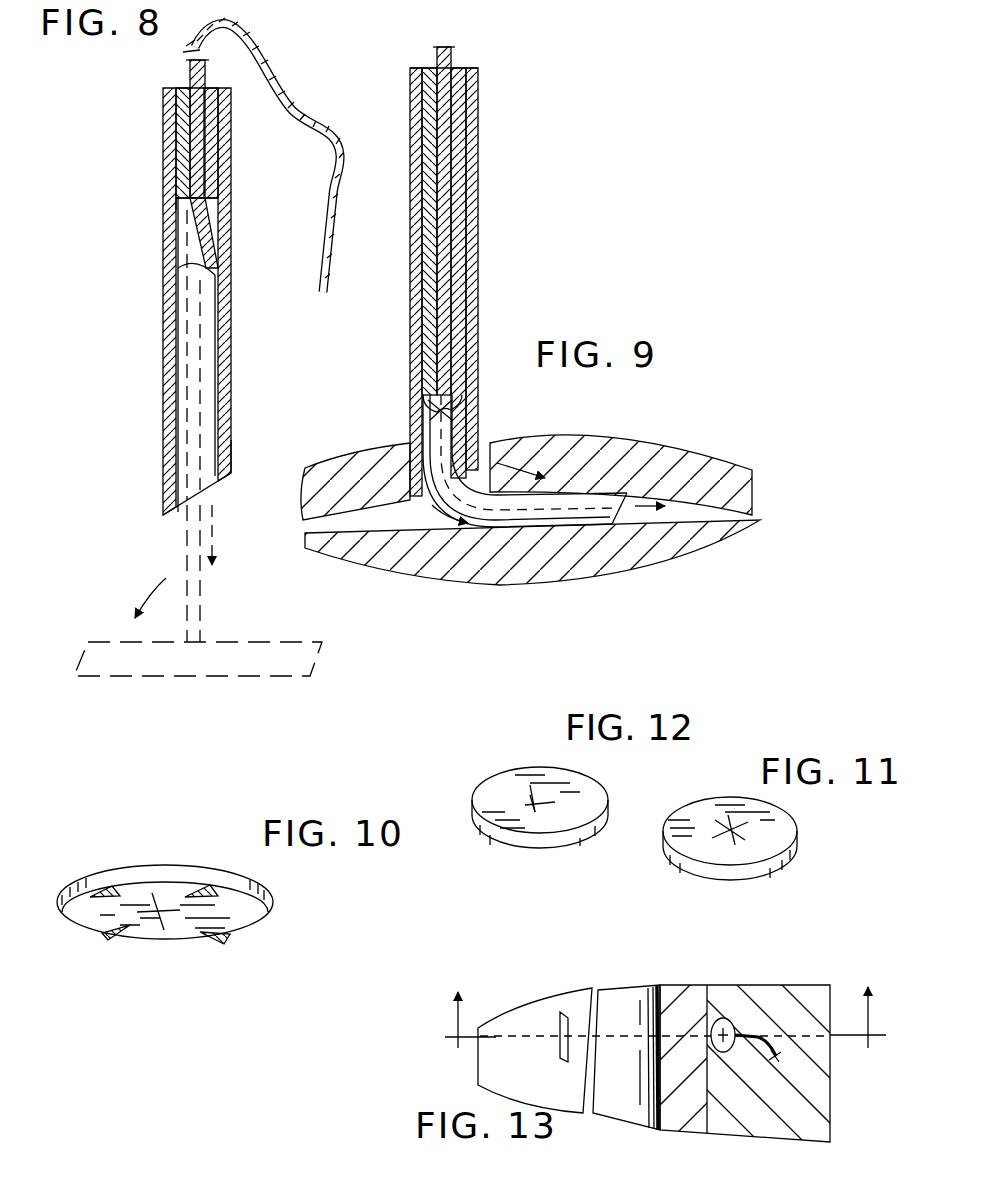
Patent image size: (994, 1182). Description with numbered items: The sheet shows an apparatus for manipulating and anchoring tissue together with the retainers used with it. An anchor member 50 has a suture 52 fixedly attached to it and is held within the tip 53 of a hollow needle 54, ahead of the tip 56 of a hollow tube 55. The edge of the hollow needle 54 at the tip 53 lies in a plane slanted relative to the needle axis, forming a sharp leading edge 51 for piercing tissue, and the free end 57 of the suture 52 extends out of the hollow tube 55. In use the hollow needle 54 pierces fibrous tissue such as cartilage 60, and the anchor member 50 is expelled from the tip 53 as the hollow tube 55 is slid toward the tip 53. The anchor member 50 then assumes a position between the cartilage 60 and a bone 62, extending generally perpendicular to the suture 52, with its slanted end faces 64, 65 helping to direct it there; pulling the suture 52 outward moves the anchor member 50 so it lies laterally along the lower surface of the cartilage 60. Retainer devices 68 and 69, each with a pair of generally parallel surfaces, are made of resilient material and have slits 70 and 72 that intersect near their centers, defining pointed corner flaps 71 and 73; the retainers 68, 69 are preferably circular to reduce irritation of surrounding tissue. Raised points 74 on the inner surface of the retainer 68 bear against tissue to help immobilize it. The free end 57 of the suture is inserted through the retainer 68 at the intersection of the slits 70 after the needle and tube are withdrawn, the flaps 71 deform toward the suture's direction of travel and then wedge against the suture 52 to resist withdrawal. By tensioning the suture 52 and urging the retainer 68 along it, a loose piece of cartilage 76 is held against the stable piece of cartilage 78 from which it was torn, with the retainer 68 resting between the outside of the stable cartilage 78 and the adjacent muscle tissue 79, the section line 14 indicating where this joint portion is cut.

In FIG. 13, the section line 14- 14 is at (662, 1030).
In FIG. 8, the anchor member 50 is at (220, 387).
In FIG. 9, the anchor member 50 is at (600, 532).
In FIG. 13, the anchor member 50 is at (560, 1028).
In FIG. 8, the sharp leading edge 51 is at (175, 512).
In FIG. 8, the suture 52 is at (219, 210).
In FIG. 9, the suture 52 is at (456, 62).
In FIG. 13, the suture 52 is at (765, 1052).
In FIG. 8, the tip of hollow needle 53 is at (232, 430).
In FIG. 8, the hollow needle 54 is at (232, 133).
In FIG. 9, the hollow needle 54 is at (480, 133).
In FIG. 8, the hollow tube 55 is at (180, 138).
In FIG. 8, the tip of hollow tube 56 is at (175, 208).
In FIG. 9, the tip of hollow tube 56 is at (426, 405).
In FIG. 8, the free end of suture 57 is at (318, 258).
In FIG. 9, the cartilage 60 is at (385, 450).
In FIG. 9, the bone 62 is at (440, 568).
In FIG. 8, the slanted end face 64 is at (180, 482).
In FIG. 9, the slanted end face 64 is at (625, 522).
In FIG. 8, the slanted end face 65 is at (218, 268).
In FIG. 9, the slanted end face 65 is at (470, 412).
In FIG. 10, the retainer 68 is at (274, 900).
In FIG. 11, the retainer 68 is at (798, 844).
In FIG. 13, the retainer 68 is at (725, 1018).
In FIG. 12, the retainer 69 is at (608, 804).
In FIG. 10, the slits 70 is at (158, 918).
In FIG. 11, the slits 70 is at (742, 842).
In FIG. 10, the pointed corner flaps 71 is at (168, 903).
In FIG. 12, the slits 72 is at (530, 800).
In FIG. 12, the pointed corner flaps 73 is at (538, 797).
In FIG. 10, the raised points 74 is at (200, 890).
In FIG. 13, the loose piece of cartilage 76 is at (574, 1100).
In FIG. 13, the stable piece of cartilage 78 is at (625, 1118).
In FIG. 13, the muscle tissue 79 is at (830, 1105).